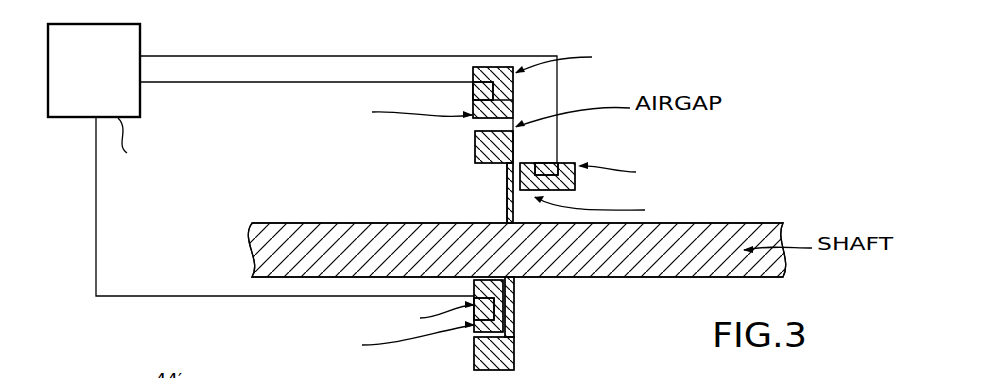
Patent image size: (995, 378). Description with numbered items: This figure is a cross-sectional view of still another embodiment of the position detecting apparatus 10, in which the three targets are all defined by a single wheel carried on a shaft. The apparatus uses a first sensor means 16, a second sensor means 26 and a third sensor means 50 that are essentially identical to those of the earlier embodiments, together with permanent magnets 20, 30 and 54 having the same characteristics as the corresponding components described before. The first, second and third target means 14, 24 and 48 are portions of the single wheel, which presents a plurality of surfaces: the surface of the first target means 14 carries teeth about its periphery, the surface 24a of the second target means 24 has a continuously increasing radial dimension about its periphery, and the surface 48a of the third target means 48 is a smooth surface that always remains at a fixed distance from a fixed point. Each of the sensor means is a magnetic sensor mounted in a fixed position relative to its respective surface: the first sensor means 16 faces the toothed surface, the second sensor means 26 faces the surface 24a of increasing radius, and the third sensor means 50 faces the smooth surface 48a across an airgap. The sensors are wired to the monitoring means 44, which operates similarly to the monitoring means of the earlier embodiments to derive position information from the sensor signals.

The monitoring means 44 is at (140, 42).
The position detecting apparatus 10 is at (368, 78).
The permanent magnet 20 is at (502, 66).
The first sensor means 16 is at (493, 112).
The first target means 14 is at (475, 150).
The third target means 48 is at (513, 145).
The smooth surface 48a is at (514, 122).
The third sensor means 50 is at (542, 162).
The permanent magnet 54 is at (576, 183).
The permanent magnet 30 is at (499, 292).
The second sensor means 26 is at (496, 320).
The surface having continuously increasing radial dimension 24a is at (500, 333).
The second target means 24 is at (470, 337).